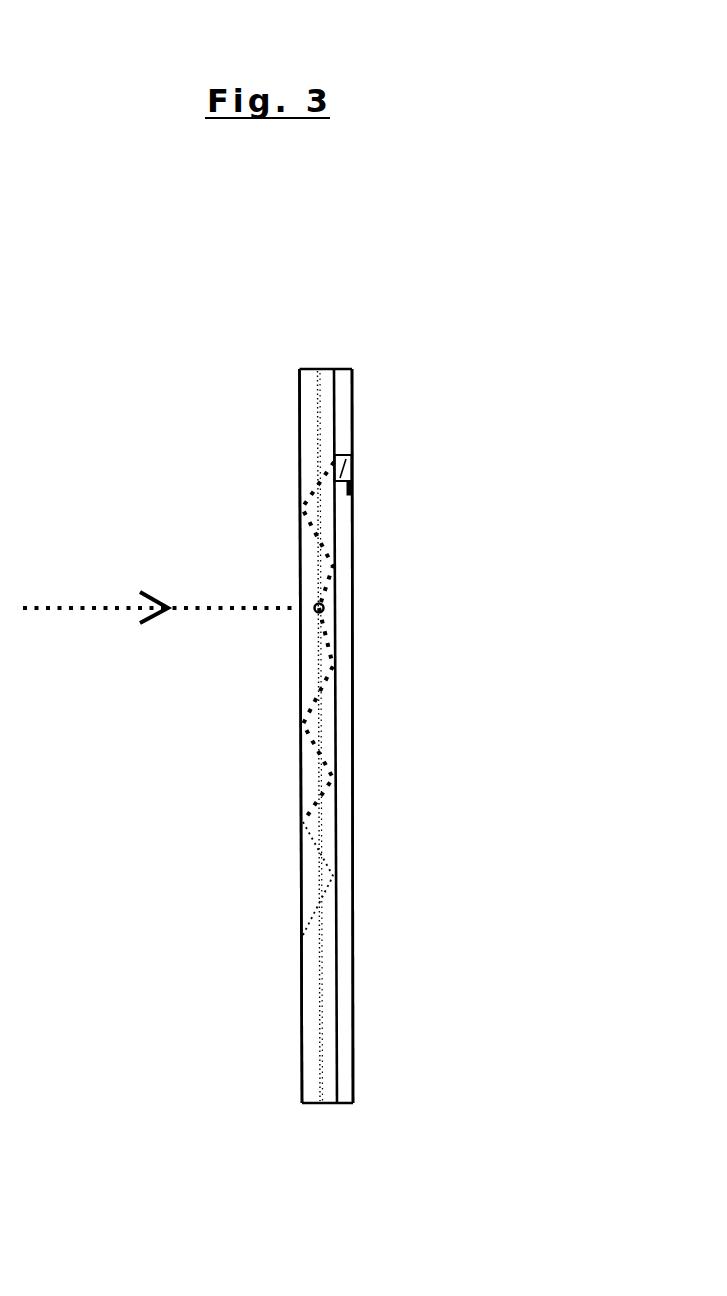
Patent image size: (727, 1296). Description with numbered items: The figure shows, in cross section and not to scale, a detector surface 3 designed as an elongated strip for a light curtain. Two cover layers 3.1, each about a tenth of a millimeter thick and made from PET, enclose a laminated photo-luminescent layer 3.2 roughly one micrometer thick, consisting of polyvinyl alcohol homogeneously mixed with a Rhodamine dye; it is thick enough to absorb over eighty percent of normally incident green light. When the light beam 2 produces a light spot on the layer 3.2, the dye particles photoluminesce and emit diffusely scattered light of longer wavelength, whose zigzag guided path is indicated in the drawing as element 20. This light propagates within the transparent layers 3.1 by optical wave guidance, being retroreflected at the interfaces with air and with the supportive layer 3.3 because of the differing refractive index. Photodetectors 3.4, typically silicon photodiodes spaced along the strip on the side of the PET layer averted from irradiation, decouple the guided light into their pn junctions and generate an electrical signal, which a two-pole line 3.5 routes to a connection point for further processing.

The detector surface 3 is at (205, 437).
The light beam 2 is at (161, 588).
The cover layer 3.1 is at (307, 748).
The photo-luminescent layer 3.2 is at (320, 882).
The supportive layer 3.3 is at (342, 1003).
The photodetector 3.4 is at (352, 457).
The two-pole line 3.5 is at (348, 484).
The in-coupling element 20 is at (333, 680).